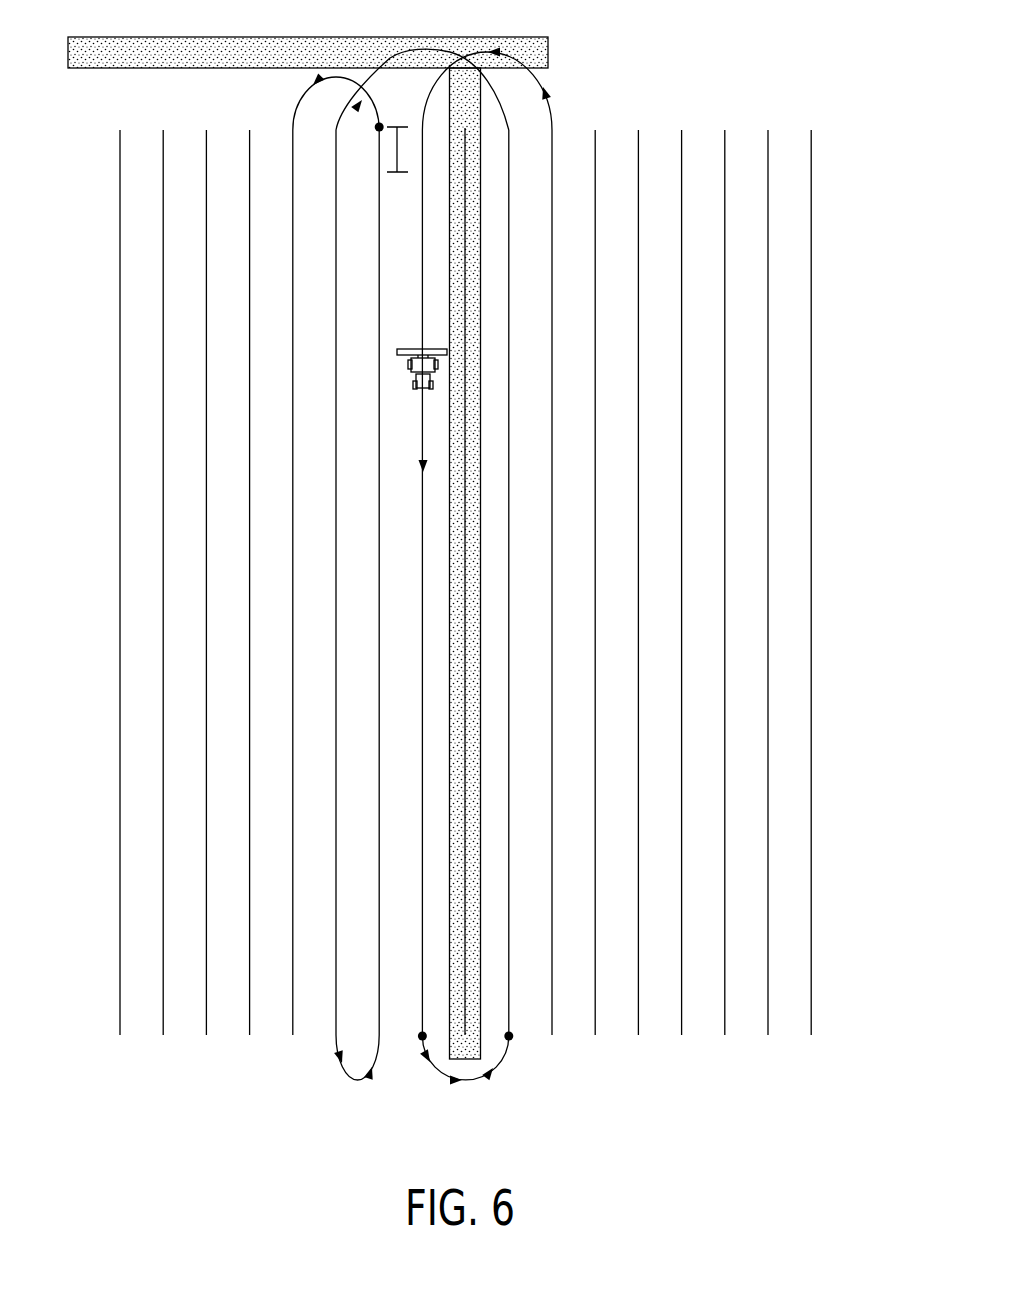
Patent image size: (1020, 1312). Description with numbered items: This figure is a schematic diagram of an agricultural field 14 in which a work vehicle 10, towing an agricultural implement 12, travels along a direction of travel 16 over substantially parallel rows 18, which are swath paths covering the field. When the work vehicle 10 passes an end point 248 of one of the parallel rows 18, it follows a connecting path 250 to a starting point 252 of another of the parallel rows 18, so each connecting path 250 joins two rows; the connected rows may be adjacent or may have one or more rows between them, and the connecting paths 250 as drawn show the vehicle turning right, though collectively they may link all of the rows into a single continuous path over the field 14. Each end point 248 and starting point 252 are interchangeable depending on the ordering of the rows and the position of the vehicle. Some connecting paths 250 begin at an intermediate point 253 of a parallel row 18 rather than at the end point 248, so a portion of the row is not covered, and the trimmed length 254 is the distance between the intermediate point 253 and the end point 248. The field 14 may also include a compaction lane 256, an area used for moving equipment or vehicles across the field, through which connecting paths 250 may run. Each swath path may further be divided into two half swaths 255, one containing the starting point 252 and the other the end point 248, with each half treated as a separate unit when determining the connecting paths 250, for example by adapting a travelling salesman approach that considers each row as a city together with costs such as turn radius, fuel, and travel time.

The work vehicle 10 is at (398, 379).
The agricultural implement 12 is at (418, 349).
The agricultural field 14 is at (787, 338).
The direction of travel 16 is at (398, 424).
The parallel rows 18 is at (205, 145).
The end point 248 is at (380, 126).
The connecting path 250 is at (308, 102).
The starting point 252 is at (510, 1038).
The intermediate point 253 is at (379, 178).
The trimmed length 254 is at (403, 150).
The half swaths 255 is at (434, 238).
The compaction lane 256 is at (482, 200).